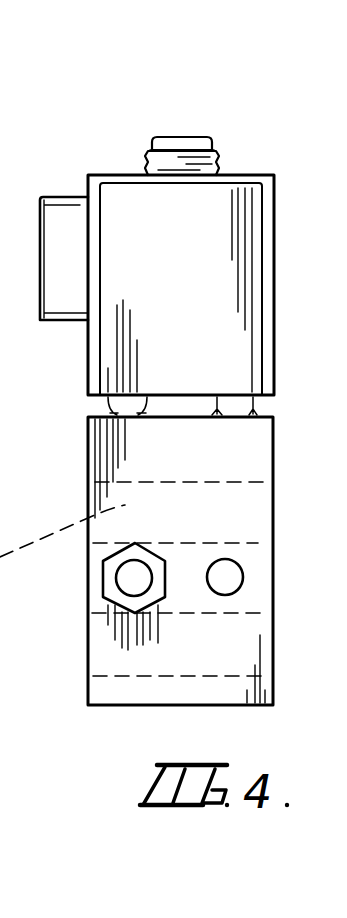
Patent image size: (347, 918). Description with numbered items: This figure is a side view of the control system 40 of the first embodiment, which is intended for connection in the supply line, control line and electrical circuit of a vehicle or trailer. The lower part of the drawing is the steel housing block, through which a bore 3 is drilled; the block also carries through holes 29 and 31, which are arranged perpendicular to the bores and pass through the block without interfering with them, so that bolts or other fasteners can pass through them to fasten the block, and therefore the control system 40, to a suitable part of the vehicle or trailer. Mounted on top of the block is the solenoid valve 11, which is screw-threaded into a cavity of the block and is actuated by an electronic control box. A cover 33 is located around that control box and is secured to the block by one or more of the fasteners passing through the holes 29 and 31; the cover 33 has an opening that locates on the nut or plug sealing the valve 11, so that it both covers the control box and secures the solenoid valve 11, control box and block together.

The control system 40 is at (127, 158).
The cover 33 is at (100, 176).
The solenoid valve 11 is at (81, 348).
The bore 3 is at (105, 659).
The through hole 31 is at (125, 576).
The through hole 29 is at (228, 577).